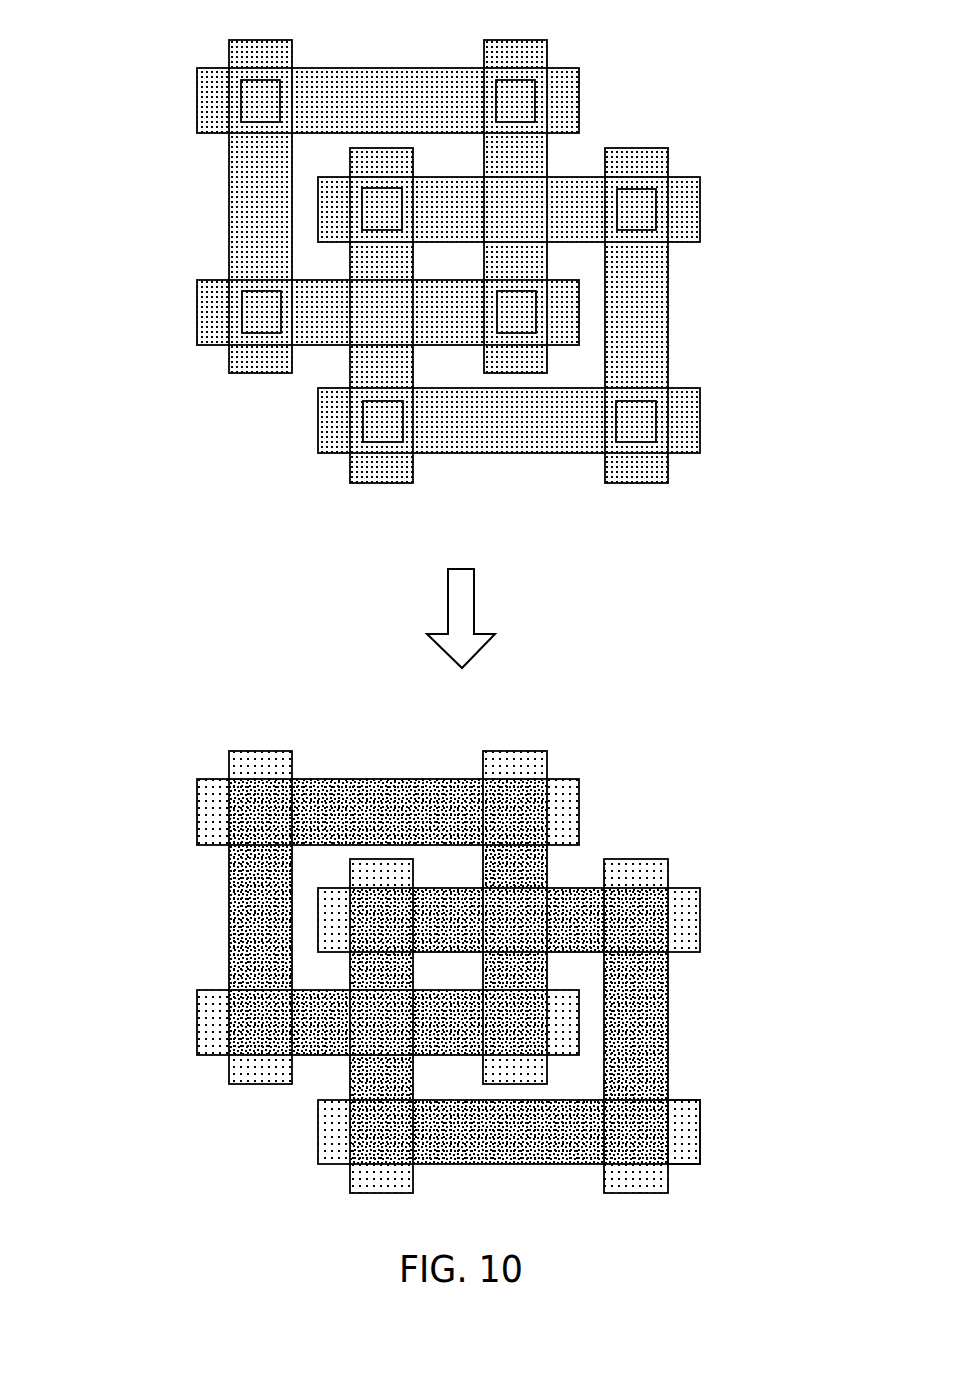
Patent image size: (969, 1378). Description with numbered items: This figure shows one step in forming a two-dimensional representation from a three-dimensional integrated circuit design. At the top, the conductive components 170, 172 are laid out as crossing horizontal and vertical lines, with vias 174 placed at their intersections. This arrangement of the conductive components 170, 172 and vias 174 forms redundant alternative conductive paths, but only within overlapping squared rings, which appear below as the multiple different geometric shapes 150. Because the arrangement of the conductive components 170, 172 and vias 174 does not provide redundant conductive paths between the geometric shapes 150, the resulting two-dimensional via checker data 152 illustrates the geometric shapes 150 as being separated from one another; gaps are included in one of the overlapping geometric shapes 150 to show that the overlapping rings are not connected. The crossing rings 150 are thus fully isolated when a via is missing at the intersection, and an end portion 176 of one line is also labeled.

The conductive component 170 is at (562, 279).
The conductive component 172 is at (514, 373).
The via 174 is at (362, 212).
The geometric shape 150 is at (588, 888).
The 2D via checker data 152 is at (512, 928).
The line end portion 176 is at (701, 1131).